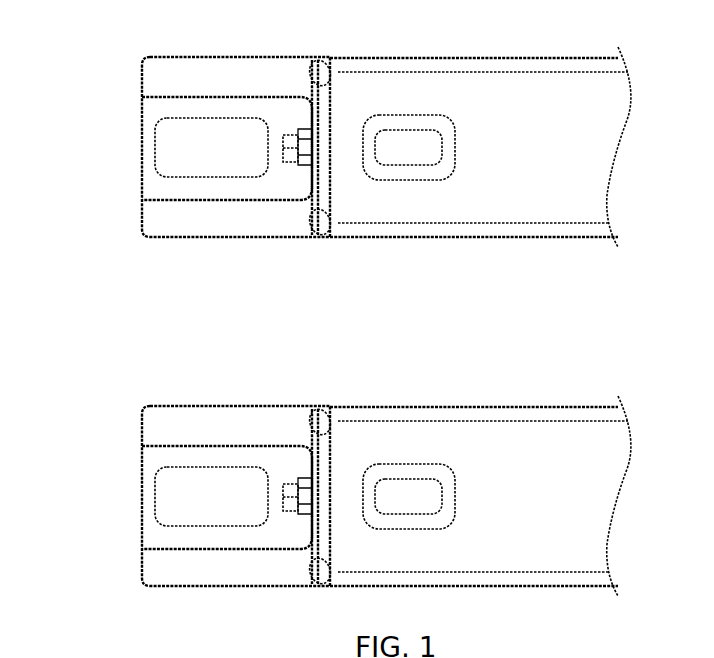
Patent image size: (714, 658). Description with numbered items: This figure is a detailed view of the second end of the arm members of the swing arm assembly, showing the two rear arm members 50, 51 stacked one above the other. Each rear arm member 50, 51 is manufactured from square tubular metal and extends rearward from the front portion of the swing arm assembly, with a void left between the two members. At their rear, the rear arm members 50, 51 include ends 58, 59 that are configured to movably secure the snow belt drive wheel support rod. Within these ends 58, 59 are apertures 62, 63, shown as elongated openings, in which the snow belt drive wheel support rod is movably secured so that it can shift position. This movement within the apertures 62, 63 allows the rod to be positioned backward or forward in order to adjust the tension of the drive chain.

The rear arm member 50 is at (543, 472).
The rear arm member 51 is at (543, 135).
The end 58 is at (112, 111).
The end 59 is at (108, 428).
The aperture 62 is at (233, 482).
The aperture 63 is at (230, 145).